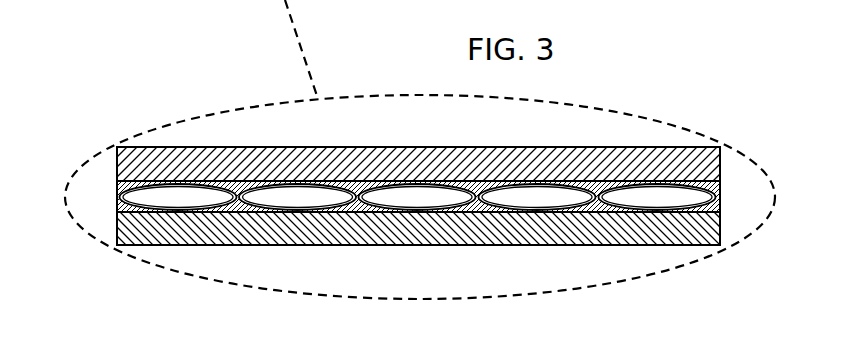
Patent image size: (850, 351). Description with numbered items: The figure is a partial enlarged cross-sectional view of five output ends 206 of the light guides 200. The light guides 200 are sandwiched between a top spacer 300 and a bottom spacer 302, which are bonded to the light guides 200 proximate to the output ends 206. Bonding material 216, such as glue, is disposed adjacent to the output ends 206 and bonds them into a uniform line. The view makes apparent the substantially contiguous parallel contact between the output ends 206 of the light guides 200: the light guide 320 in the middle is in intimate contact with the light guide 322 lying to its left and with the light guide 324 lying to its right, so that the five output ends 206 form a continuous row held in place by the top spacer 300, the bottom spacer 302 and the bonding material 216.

The light guides 200 is at (720, 197).
The output ends 206 is at (690, 198).
The bonding material 216 is at (117, 207).
The top spacer 300 is at (436, 147).
The bottom spacer 302 is at (437, 232).
The light guide 320 is at (432, 204).
The light guide 322 is at (313, 204).
The light guide 324 is at (552, 204).